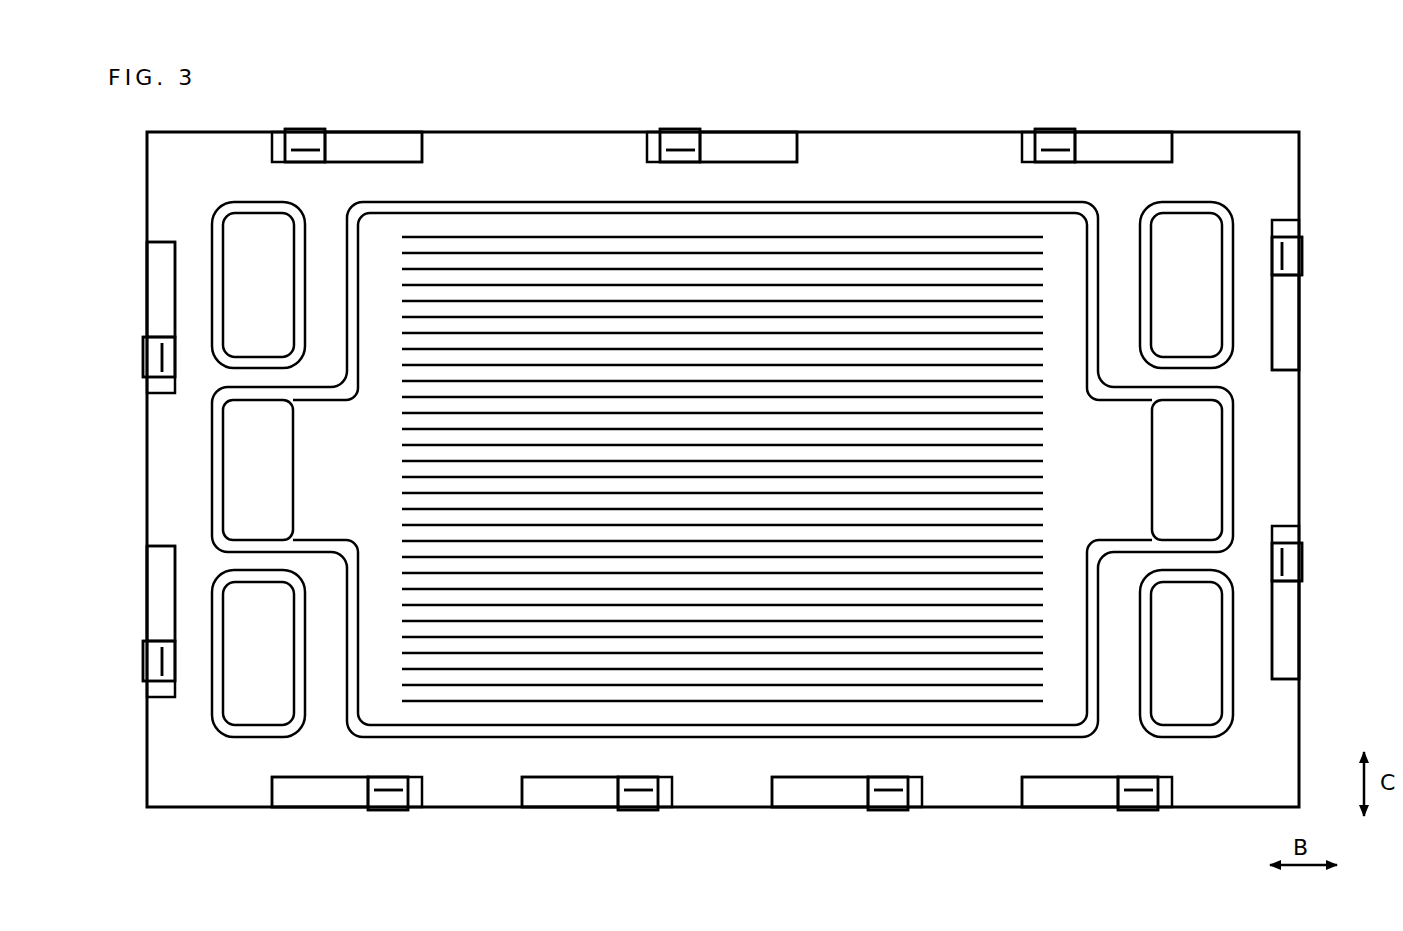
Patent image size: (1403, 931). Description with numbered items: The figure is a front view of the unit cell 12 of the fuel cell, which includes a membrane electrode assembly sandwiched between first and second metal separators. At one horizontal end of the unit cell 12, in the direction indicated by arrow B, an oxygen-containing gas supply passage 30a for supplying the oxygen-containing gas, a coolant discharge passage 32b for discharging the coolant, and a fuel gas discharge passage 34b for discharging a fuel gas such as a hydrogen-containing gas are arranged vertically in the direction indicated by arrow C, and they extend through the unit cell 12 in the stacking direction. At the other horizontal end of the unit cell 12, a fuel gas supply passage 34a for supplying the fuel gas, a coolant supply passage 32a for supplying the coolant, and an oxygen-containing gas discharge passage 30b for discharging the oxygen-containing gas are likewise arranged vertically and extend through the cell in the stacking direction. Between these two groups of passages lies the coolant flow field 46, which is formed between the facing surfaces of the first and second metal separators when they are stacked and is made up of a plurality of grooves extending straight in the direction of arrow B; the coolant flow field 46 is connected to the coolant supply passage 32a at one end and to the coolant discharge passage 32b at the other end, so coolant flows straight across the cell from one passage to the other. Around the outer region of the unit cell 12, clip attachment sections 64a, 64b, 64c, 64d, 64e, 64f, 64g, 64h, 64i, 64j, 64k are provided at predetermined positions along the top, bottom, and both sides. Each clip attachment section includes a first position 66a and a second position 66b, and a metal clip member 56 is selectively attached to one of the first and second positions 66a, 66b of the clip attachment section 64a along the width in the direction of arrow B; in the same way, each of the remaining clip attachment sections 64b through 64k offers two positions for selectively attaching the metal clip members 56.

The unit cell 12 is at (1304, 84).
The coolant flow field 46 is at (888, 267).
The oxygen-containing gas supply passage 30a is at (258, 285).
The oxygen-containing gas discharge passage 30b is at (1186, 653).
The coolant supply passage 32a is at (1187, 470).
The coolant discharge passage 32b is at (258, 470).
The fuel gas supply passage 34a is at (1186, 285).
The fuel gas discharge passage 34b is at (258, 653).
The metal clip member 56 is at (287, 129).
The clip attachment section 64a is at (344, 124).
The clip attachment section 64b is at (719, 124).
The clip attachment section 64c is at (1094, 124).
The clip attachment section 64d is at (1308, 367).
The clip attachment section 64e is at (1308, 673).
The clip attachment section 64f is at (1090, 810).
The clip attachment section 64g is at (840, 810).
The clip attachment section 64h is at (590, 810).
The clip attachment section 64i is at (340, 810).
The clip attachment section 64j is at (144, 614).
The clip attachment section 64k is at (144, 317).
The first position 66a is at (308, 128).
The second position 66b is at (385, 130).